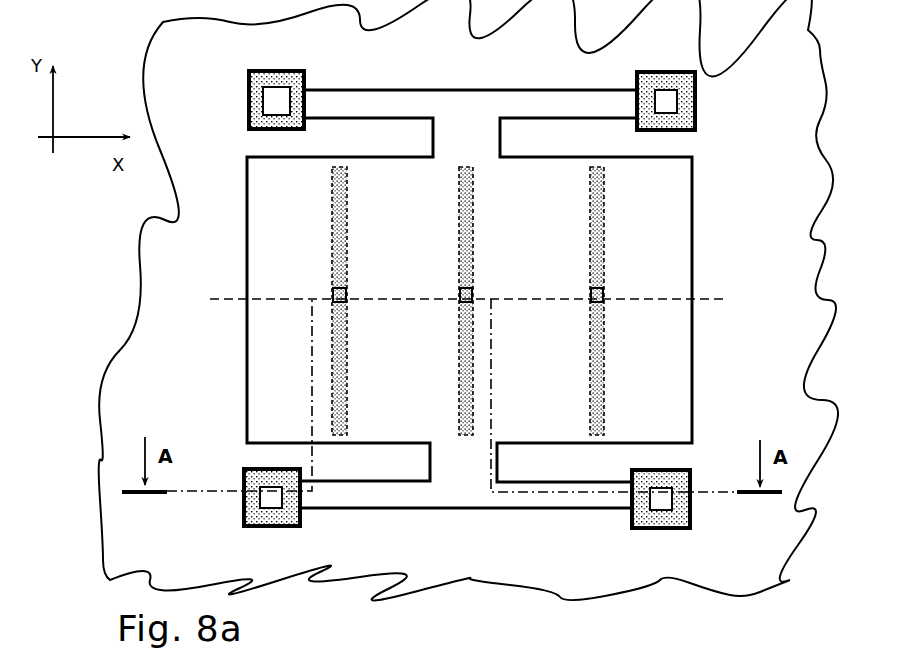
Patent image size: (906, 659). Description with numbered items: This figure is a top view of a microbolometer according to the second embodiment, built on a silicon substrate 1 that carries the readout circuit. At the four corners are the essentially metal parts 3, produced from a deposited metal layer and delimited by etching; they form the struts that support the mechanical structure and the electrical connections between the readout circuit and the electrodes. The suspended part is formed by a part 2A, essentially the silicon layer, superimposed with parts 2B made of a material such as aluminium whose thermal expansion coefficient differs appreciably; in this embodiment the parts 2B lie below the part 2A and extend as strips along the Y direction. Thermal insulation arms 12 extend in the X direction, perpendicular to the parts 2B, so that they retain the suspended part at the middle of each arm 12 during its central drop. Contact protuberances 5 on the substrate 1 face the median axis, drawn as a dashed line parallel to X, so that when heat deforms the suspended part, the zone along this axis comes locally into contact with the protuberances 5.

The substrate 1 is at (185, 345).
The thermal insulation arms 12 is at (388, 108).
The part of the suspended part 2A is at (287, 282).
The parts of the suspended part 2B is at (338, 400).
The contact protuberances 5 is at (470, 291).
The parts associated with second apertures 3 is at (682, 467).